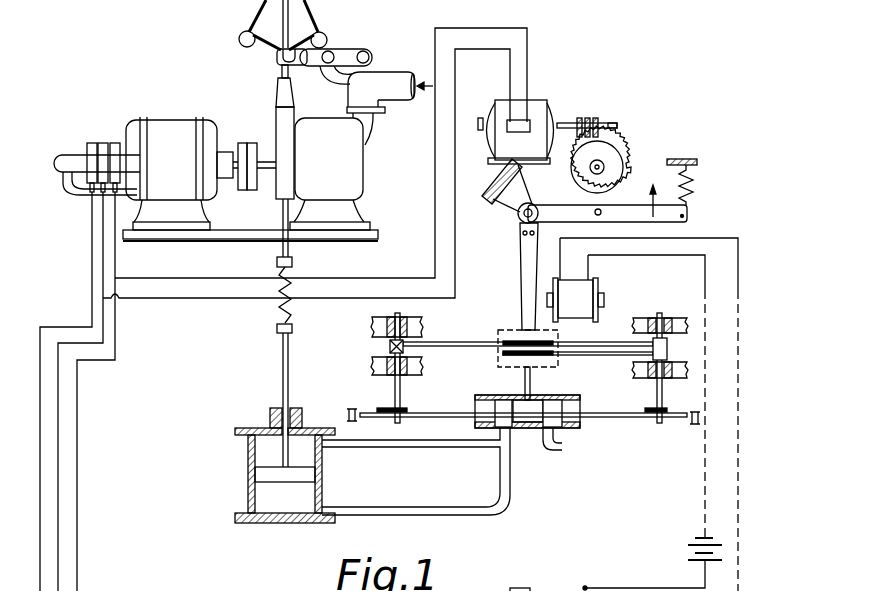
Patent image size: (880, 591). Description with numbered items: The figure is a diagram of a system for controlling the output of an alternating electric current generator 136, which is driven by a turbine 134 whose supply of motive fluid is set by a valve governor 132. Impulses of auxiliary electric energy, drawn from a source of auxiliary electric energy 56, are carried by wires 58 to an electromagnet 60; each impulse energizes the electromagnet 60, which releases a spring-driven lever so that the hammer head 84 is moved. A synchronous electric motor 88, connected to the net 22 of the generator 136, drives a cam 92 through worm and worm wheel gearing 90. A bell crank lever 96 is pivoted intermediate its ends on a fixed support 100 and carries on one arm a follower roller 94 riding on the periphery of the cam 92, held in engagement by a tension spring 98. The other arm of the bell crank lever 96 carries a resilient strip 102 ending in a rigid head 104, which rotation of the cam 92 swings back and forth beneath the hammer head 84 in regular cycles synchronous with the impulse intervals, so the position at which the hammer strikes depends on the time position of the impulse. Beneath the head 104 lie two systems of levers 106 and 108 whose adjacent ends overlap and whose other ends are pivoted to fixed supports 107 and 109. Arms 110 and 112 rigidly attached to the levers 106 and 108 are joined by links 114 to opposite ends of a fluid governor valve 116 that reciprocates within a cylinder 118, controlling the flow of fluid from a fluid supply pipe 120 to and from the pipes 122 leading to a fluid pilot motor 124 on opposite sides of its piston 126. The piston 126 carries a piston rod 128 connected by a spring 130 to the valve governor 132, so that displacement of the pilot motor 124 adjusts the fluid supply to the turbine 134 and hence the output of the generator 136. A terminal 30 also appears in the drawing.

The net 22 is at (77, 580).
The terminal 30 is at (584, 588).
The source of auxiliary electric energy 56 is at (694, 548).
The wires 58 is at (707, 430).
The electromagnet 60 is at (575, 280).
The hammer head 84 is at (510, 332).
The synchronous electric motor 88 is at (532, 110).
The worm and worm wheel gearing 90 is at (603, 131).
The cam 92 is at (608, 178).
The follower roller 94 is at (655, 186).
The bell crank lever 96 is at (660, 216).
The tension spring 98 is at (690, 185).
The fixed support 100 is at (522, 214).
The resilient strip 102 is at (532, 263).
The rigid head 104 is at (535, 334).
The lever 106 is at (463, 350).
The fixed support 107 is at (400, 321).
The lever 108 is at (587, 356).
The fixed support 109 is at (659, 318).
The arm 110 is at (402, 408).
The arm 112 is at (663, 409).
The links 114 is at (630, 418).
The fluid governor valve 116 is at (553, 421).
The cylinder 118 is at (578, 433).
The fluid supply pipe 120 is at (537, 378).
The pipes 122 is at (467, 477).
The fluid pilot motor 124 is at (322, 498).
The piston 126 is at (305, 478).
The piston rod 128 is at (290, 383).
The spring 130 is at (293, 290).
The valve governor 132 is at (278, 46).
The turbine 134 is at (330, 174).
The alternating electric current generator 136 is at (201, 173).